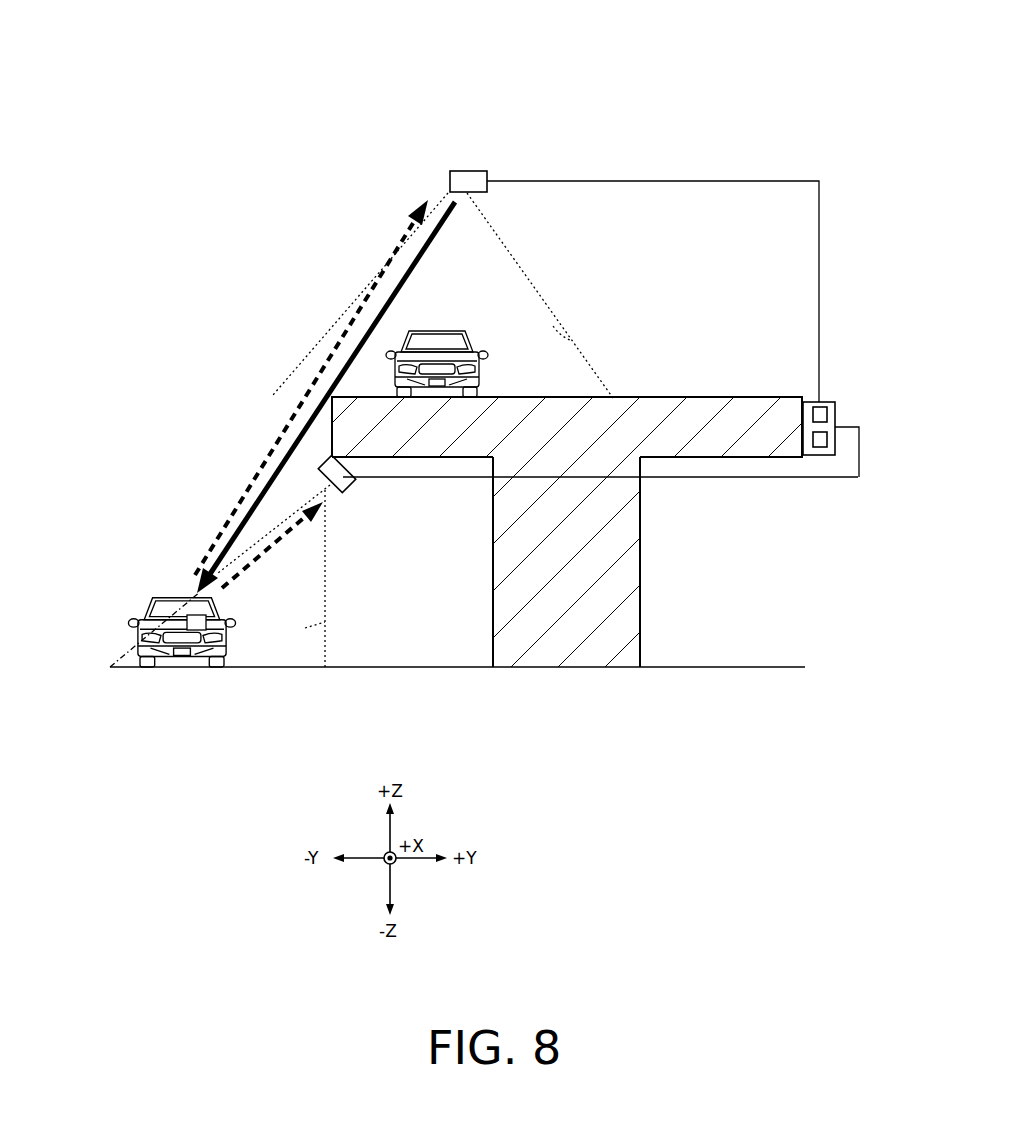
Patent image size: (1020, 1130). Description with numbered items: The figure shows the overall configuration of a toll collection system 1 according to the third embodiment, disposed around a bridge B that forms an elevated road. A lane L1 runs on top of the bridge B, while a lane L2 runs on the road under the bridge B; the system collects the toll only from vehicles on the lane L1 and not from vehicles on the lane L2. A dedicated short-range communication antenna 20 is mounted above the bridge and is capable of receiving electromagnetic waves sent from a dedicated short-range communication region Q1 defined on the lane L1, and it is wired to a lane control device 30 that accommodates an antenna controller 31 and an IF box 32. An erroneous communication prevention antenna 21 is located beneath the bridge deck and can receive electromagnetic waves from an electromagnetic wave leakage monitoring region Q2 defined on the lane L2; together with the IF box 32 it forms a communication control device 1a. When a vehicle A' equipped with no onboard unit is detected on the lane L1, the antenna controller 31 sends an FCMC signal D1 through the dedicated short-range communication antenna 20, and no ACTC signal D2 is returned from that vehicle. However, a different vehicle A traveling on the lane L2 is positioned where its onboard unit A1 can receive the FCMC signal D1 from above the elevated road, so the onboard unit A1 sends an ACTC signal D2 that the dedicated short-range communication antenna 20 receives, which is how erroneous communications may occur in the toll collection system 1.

The toll collection system 1 is at (676, 78).
The communication control device 1a is at (740, 495).
The dedicated short-range communication antenna 20 is at (465, 181).
The erroneous communication prevention antenna 21 is at (350, 490).
The lane control device 30 is at (836, 412).
The antenna controller 31 is at (823, 407).
The IF box 32 is at (820, 447).
The vehicle A is at (181, 590).
The vehicle A' is at (437, 333).
The onboard unit A1 is at (198, 632).
The bridge B is at (625, 610).
The FCMC signal D1 is at (268, 483).
The ACTC signal D2 is at (232, 503).
The lane L1 is at (577, 397).
The lane L2 is at (130, 660).
The dedicated short-range communication region Q1 is at (563, 323).
The electromagnetic wave leakage monitoring region Q2 is at (320, 620).